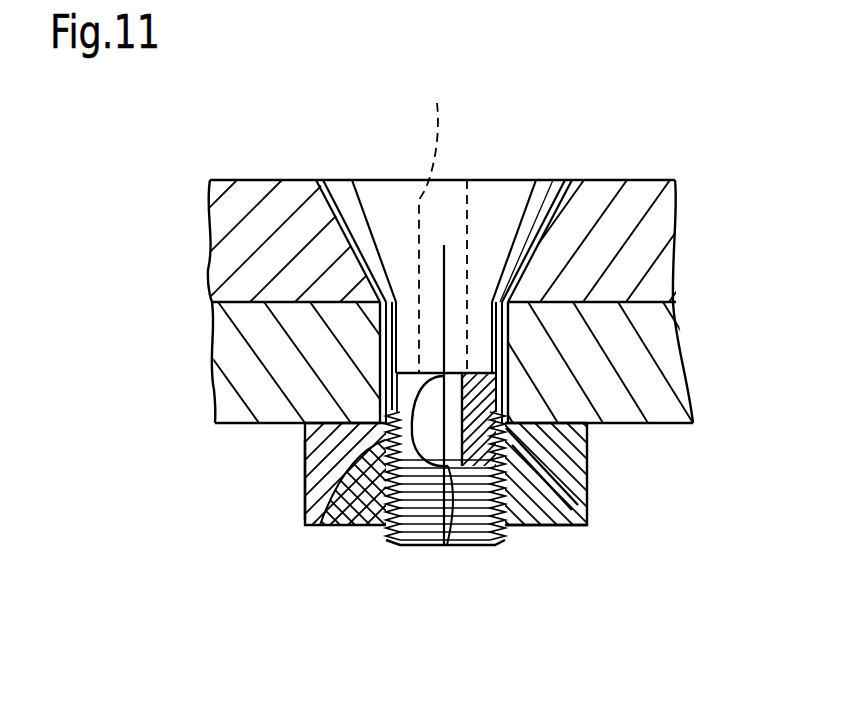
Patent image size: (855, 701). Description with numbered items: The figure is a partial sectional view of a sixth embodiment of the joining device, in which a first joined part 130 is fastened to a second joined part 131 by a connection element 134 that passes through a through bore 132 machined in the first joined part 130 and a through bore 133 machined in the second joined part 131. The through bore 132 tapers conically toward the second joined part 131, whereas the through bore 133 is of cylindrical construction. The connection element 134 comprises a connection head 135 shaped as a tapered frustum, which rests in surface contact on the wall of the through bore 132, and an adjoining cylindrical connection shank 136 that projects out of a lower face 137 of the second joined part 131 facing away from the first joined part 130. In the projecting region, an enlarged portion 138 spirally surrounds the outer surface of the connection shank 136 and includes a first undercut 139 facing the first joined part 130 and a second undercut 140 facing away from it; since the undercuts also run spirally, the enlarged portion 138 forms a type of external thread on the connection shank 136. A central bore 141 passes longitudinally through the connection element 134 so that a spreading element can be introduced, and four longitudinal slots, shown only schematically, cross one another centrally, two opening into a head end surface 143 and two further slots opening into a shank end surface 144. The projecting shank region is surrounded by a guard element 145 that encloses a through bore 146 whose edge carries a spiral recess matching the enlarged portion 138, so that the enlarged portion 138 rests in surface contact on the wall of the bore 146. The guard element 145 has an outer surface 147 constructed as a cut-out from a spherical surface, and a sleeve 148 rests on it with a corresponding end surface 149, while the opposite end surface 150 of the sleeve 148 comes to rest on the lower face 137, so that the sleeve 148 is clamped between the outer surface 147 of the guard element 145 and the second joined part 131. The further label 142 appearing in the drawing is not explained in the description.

The first joined part 130 is at (659, 228).
The second joined part 131 is at (668, 378).
The through bore 132 is at (334, 180).
The through bore 133 is at (382, 366).
The connection element 134 is at (409, 135).
The connection head 135 is at (513, 183).
The connection shank 136 is at (310, 484).
The lower face 137 is at (677, 424).
The enlarged portion 138 is at (386, 515).
The first undercut 139 is at (497, 532).
The second undercut 140 is at (473, 548).
The central bore 141 is at (438, 220).
The clearance gap / guide wire 142 is at (373, 180).
The head end surface 143 is at (485, 180).
The shank end surface 144 is at (407, 545).
The guard element 145 is at (556, 516).
The through bore 146 is at (345, 517).
The outer surface 147 is at (587, 499).
The sleeve 148 is at (303, 493).
The end surface 149 is at (555, 492).
The end surface 150 is at (567, 425).